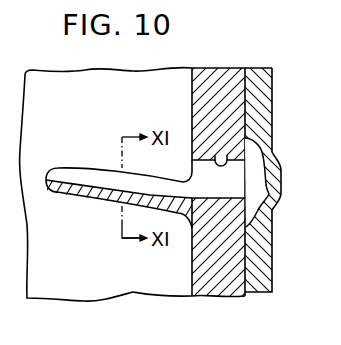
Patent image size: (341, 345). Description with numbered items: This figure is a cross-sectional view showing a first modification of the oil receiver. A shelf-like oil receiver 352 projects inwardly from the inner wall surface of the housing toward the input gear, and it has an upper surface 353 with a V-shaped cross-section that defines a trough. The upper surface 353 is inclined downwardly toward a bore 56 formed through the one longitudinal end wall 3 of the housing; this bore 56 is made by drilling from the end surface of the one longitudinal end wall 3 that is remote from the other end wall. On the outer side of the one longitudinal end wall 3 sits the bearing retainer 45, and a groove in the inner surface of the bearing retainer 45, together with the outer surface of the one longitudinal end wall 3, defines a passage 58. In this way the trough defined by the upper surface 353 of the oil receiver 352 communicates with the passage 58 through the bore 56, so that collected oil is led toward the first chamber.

The one longitudinal end wall 3 is at (220, 286).
The bearing retainer 45 is at (272, 255).
The bore 56 is at (222, 156).
The passage 58 is at (273, 201).
The shelf-like oil receiver 352 is at (100, 200).
The upper surface 353 is at (85, 180).